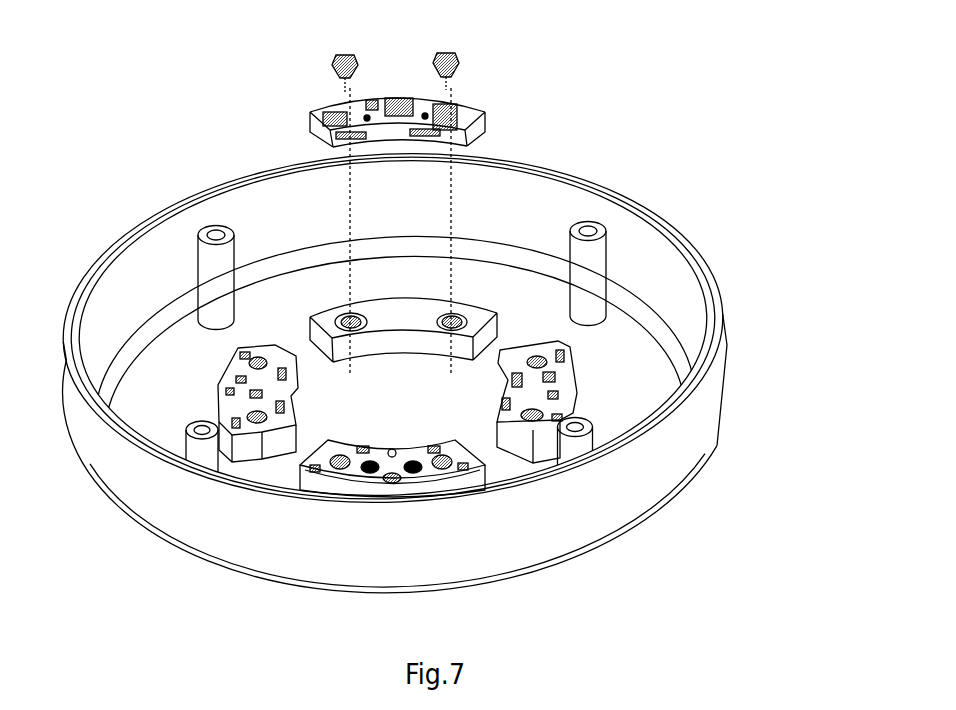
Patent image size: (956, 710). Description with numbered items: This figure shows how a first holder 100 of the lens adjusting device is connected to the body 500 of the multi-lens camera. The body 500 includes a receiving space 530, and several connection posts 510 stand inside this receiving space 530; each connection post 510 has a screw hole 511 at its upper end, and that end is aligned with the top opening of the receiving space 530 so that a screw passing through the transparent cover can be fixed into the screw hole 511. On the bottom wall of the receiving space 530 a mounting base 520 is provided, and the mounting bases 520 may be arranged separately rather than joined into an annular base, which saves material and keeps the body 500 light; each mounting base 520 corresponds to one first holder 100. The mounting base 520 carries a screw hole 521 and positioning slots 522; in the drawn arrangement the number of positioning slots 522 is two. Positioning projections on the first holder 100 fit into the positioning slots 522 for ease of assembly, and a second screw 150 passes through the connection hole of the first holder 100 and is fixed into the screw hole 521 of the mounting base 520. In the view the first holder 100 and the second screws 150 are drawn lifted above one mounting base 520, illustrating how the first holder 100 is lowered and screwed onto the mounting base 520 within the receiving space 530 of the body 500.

The first holder 100 is at (476, 120).
The second screw 150 is at (462, 57).
The body 500 is at (647, 487).
The connection post 510 is at (583, 268).
The screw hole 511 is at (594, 227).
The mounting base 520 is at (398, 324).
The screw hole 521 is at (463, 313).
The positioning slot 522 is at (450, 318).
The receiving space 530 is at (650, 392).